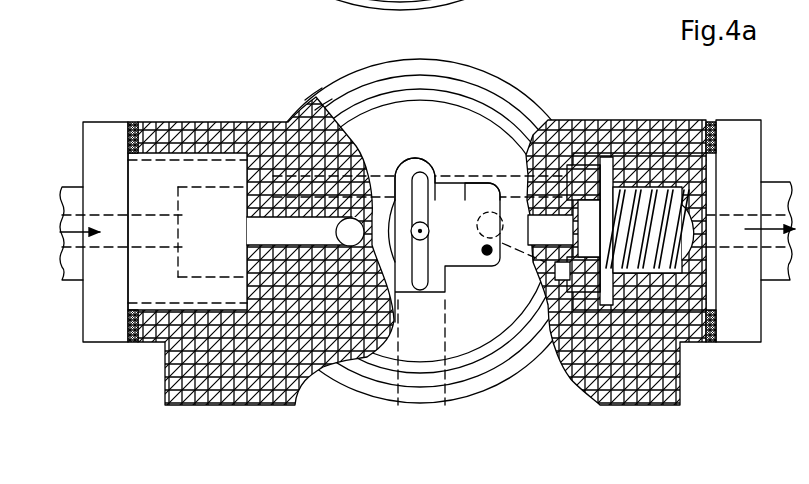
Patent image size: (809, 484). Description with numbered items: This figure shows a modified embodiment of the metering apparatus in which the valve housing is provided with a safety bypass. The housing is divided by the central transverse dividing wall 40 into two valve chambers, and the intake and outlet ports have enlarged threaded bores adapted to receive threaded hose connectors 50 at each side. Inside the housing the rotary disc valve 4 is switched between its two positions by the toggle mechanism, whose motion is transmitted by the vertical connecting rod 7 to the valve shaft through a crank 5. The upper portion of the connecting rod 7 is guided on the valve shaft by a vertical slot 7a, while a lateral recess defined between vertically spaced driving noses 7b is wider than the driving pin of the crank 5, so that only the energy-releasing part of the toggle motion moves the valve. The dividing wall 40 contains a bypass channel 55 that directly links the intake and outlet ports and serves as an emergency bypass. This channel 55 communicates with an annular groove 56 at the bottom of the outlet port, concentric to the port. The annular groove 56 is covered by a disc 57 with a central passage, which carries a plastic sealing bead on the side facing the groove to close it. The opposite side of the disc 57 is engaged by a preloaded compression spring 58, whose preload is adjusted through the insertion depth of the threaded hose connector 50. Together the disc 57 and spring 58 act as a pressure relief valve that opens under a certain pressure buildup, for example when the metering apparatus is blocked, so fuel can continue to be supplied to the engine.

The rotary disc valve 4 is at (453, 150).
The crank 5 is at (425, 240).
The connecting rod 7 is at (420, 310).
The vertical slot 7a is at (422, 187).
The driving noses 7b is at (535, 130).
The dividing wall 40 is at (298, 120).
The threaded hose connectors 50 is at (110, 320).
The bypass channel 55 is at (577, 150).
The annular groove 56 is at (562, 280).
The disc 57 is at (590, 295).
The compression spring 58 is at (642, 312).